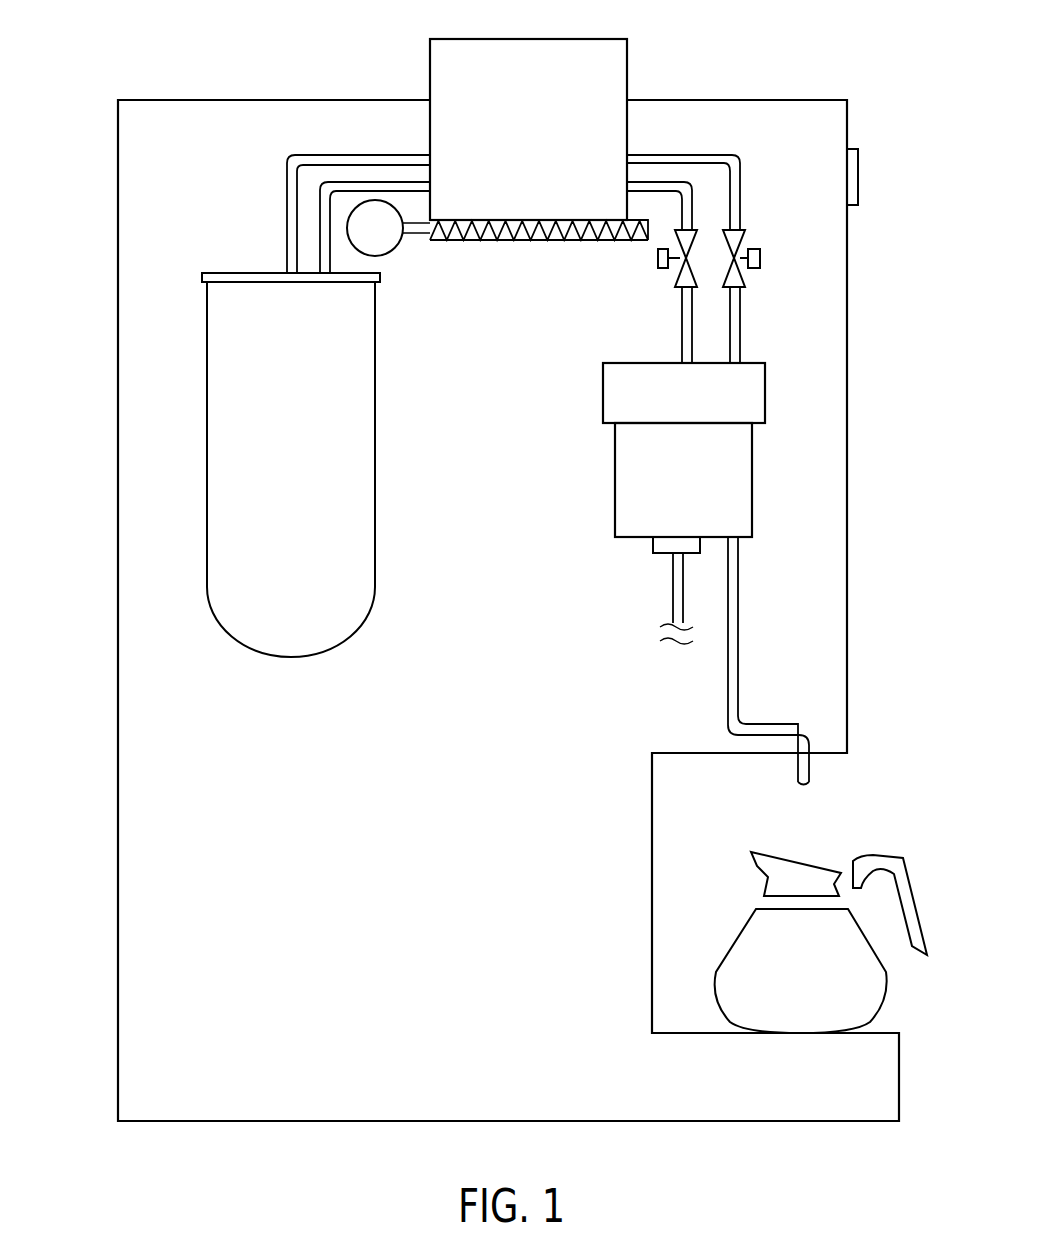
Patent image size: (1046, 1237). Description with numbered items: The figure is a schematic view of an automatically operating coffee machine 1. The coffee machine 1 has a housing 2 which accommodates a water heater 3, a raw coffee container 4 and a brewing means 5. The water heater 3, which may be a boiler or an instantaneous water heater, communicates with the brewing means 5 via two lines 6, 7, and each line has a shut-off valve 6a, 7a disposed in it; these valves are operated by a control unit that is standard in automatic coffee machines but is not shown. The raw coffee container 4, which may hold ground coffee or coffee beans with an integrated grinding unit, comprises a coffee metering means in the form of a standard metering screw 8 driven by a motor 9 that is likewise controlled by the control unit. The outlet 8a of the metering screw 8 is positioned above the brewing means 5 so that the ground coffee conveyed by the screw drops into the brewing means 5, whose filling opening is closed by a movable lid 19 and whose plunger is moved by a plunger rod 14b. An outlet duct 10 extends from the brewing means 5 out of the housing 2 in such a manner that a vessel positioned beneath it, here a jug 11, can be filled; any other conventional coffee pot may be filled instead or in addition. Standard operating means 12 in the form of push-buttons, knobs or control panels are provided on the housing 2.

The coffee machine 1 is at (776, 68).
The housing 2 is at (117, 675).
The water heater 3 is at (297, 418).
The raw coffee container 4 is at (538, 145).
The brewing means 5 is at (696, 475).
The line 6 is at (331, 266).
The shut-off valve 6a is at (676, 288).
The line 7 is at (287, 223).
The shut-off valve 7a is at (745, 241).
The metering screw 8 is at (540, 245).
The outlet of the metering screw 8a is at (662, 234).
The motor 9 is at (397, 248).
The outlet duct 10 is at (741, 603).
The jug 11 is at (820, 992).
The operating means 12 is at (859, 170).
The plunger rod 14b is at (670, 608).
The lid 19 is at (766, 390).